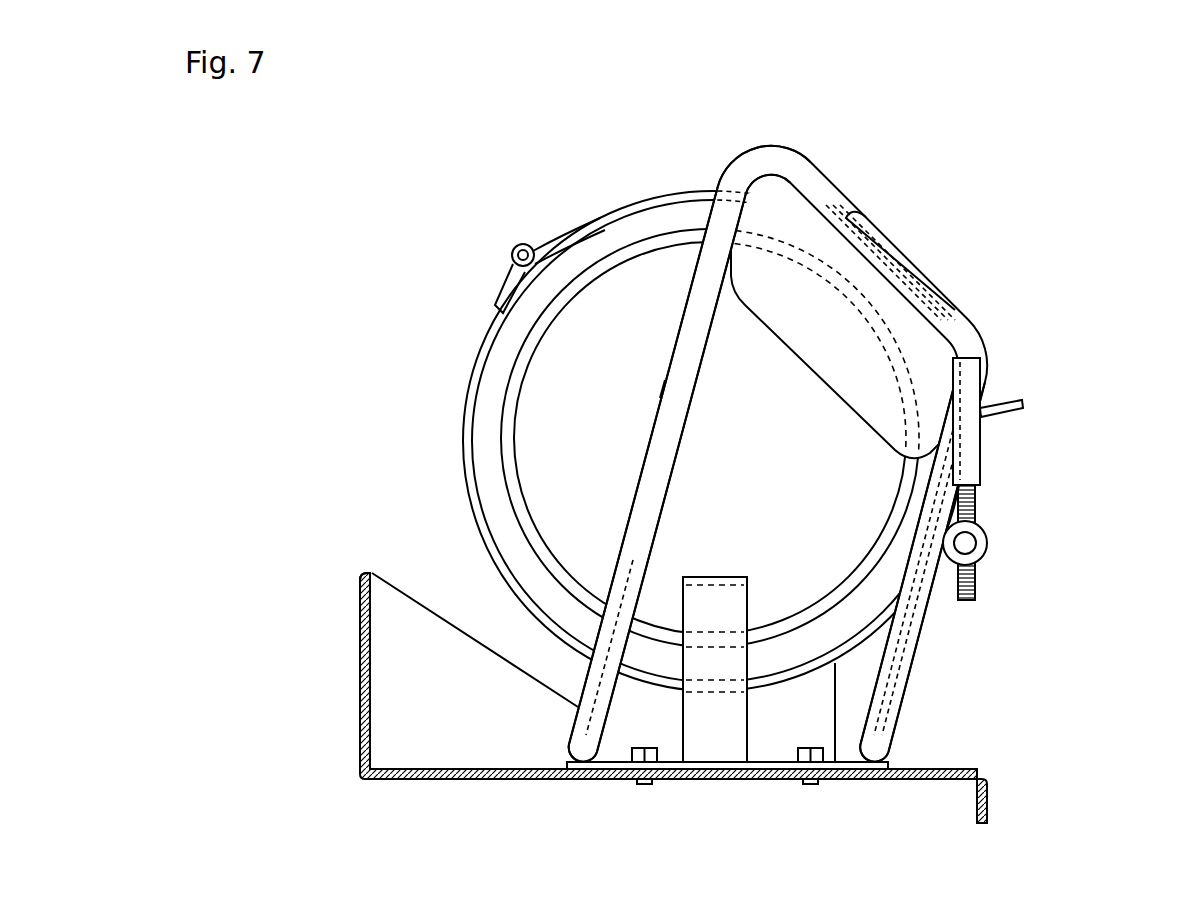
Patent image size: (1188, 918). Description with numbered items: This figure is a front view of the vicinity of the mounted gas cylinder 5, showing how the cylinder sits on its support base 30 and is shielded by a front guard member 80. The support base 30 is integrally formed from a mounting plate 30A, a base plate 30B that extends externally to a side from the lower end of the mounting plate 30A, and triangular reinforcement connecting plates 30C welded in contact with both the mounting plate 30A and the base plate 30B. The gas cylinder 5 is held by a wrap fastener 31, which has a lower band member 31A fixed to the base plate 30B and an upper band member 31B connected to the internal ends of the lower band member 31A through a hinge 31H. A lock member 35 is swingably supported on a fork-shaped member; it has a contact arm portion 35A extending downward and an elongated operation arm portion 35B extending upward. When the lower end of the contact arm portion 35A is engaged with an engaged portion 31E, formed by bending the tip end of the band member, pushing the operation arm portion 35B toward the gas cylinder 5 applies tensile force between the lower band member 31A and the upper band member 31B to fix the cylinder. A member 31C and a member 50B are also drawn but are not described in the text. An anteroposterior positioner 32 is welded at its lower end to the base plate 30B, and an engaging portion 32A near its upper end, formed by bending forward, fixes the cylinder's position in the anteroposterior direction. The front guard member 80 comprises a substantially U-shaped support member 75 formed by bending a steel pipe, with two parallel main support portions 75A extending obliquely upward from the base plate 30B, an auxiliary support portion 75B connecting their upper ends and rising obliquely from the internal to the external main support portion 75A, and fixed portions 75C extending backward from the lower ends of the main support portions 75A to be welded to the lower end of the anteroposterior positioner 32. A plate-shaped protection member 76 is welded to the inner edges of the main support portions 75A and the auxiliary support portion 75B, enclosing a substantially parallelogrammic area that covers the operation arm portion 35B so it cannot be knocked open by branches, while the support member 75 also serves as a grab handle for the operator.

The gas cylinder 5 is at (497, 326).
The support base 30 is at (675, 698).
The mounting plate 30A is at (358, 678).
The base plate 30B is at (497, 767).
The reinforcement connecting plate 30C is at (442, 620).
The wrap fastener 31 is at (656, 423).
The lower band member 31A is at (463, 467).
The upper band member 31B is at (642, 193).
The support post 31C is at (836, 683).
The engaged portion 31E is at (1023, 400).
The hinge 31H is at (520, 246).
The anteroposterior positioner 32 is at (745, 702).
The engaging portion 32A is at (716, 577).
The lock member 35 is at (984, 452).
The contact arm portion 35A is at (990, 390).
The operation arm portion 35B is at (893, 222).
The strap segment 50B is at (870, 583).
The support member 75 is at (765, 453).
The main support portion 75A is at (651, 441).
The auxiliary support portion 75B is at (840, 190).
The fixed portion 75C is at (578, 727).
The plate-shaped protection member 76 is at (822, 357).
The front guard member 80 is at (656, 397).